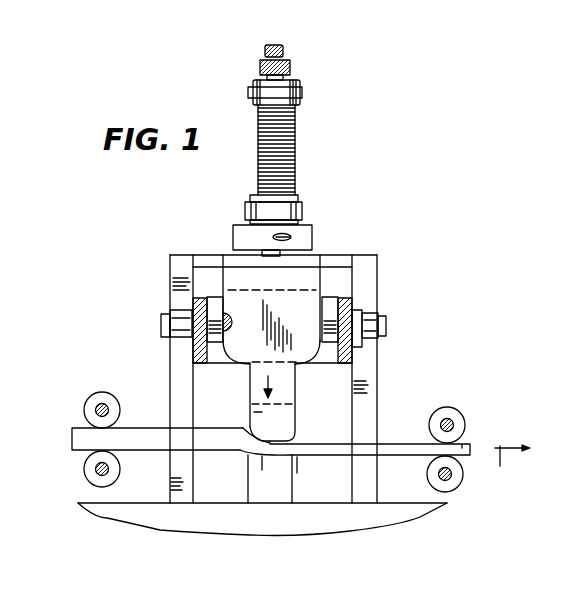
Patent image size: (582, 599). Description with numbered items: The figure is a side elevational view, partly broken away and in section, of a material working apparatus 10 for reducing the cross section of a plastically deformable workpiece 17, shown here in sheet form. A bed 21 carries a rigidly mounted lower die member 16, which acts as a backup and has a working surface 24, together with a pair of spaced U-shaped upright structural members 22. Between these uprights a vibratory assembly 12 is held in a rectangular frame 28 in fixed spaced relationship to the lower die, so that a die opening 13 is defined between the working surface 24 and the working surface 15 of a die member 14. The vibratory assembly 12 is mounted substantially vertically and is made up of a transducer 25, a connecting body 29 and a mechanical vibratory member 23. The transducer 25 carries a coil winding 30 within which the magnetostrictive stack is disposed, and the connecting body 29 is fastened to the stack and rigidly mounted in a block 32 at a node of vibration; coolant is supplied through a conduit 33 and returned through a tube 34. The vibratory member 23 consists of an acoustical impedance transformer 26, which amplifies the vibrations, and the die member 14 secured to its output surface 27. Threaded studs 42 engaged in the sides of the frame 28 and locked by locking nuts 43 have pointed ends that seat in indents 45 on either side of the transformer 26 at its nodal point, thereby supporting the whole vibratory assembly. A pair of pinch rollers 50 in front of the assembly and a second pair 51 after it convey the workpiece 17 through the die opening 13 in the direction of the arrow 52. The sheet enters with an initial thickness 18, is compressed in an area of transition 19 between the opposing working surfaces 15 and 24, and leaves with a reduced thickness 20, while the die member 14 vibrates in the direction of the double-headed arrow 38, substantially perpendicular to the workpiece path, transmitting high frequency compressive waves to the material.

The material working apparatus 10 is at (378, 250).
The vibratory assembly 12 is at (302, 135).
The die opening 13 is at (270, 460).
The die member 14 is at (293, 423).
The working surface 15 is at (256, 438).
The lower die member 16 is at (290, 503).
The workpiece 17 is at (157, 429).
The initial thickness 18 is at (72, 440).
The area of transition 19 is at (240, 453).
The reduced thickness 20 is at (468, 445).
The bed 21 is at (205, 532).
The U-shaped upright structural members 22 is at (193, 262).
The mechanical vibratory member 23 is at (302, 342).
The working surface 24 is at (297, 458).
The transducer 25 is at (300, 207).
The acoustical impedance transformer 26 is at (240, 266).
The output surface 27 is at (265, 410).
The rectangular frame 28 is at (345, 297).
The connecting body 29 is at (313, 251).
The coil winding 30 is at (298, 152).
The block 32 is at (240, 226).
The conduit 33 is at (291, 237).
The tube 34 is at (285, 51).
The double-headed arrow 38 is at (289, 393).
The threaded studs 42 is at (162, 318).
The locking nuts 43 is at (185, 305).
The indents 45 is at (247, 314).
The pinch rollers 50 is at (99, 394).
The second pair of pinch rollers 51 is at (466, 394).
The arrow 52 is at (512, 465).